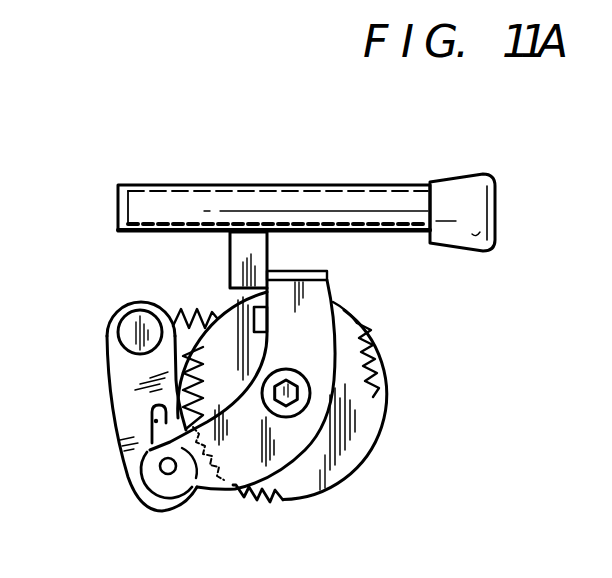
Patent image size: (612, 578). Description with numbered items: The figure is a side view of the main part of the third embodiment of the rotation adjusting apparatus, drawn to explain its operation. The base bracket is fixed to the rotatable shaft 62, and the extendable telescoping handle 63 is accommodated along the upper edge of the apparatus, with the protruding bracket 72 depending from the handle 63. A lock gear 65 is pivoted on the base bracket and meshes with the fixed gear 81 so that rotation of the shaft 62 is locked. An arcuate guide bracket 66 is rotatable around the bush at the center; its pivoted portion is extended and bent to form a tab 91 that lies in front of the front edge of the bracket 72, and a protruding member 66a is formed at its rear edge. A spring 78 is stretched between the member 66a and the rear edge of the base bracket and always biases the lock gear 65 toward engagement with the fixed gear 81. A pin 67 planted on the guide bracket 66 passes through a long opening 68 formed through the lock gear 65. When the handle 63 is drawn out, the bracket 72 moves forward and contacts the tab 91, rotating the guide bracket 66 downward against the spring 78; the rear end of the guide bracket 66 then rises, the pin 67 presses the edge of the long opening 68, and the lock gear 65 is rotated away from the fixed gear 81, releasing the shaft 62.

The rotatable shaft 62 is at (302, 413).
The handle 63 is at (405, 184).
The lock gear 65 is at (124, 359).
The guide bracket 66 is at (178, 493).
The protruding member 66a is at (265, 320).
The pin 67 is at (147, 483).
The long opening 68 is at (153, 414).
The bracket 72 is at (248, 250).
The spring 78 is at (200, 310).
The fixed gear 81 is at (379, 355).
The tab 91 is at (324, 274).